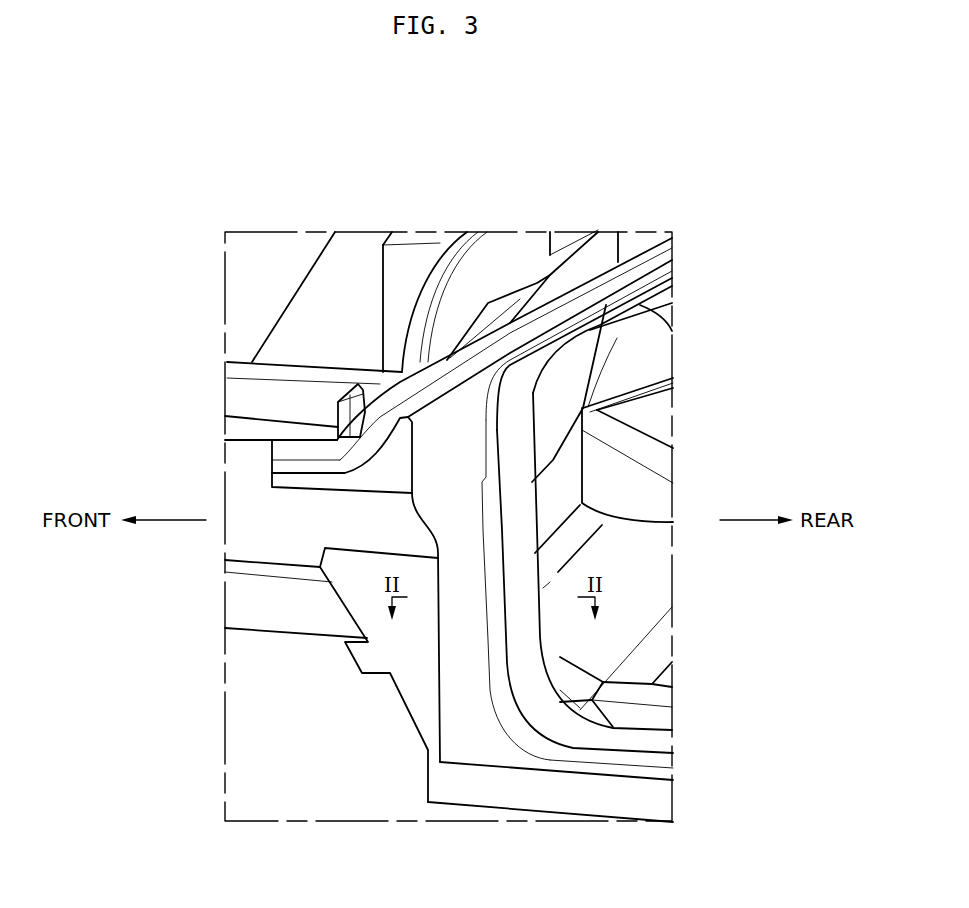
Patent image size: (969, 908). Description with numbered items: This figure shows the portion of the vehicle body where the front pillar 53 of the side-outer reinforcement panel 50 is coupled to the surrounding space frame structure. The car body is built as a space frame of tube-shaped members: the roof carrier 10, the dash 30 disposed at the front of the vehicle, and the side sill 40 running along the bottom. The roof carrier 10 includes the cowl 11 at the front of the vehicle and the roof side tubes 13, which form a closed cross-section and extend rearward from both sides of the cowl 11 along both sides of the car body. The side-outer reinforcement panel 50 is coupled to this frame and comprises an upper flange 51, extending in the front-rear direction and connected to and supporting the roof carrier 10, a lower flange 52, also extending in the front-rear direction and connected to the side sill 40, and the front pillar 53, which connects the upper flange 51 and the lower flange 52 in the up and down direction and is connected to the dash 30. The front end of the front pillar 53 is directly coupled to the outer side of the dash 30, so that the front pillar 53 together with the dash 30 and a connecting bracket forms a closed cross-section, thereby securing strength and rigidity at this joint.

The roof carrier 10 is at (426, 266).
The cowl 11 is at (508, 257).
The roof side tube 13 is at (641, 260).
The dash 30 is at (370, 608).
The side sill 40 is at (587, 797).
The side-outer reinforcement panel 50 is at (540, 783).
The upper flange 51 is at (667, 282).
The lower flange 52 is at (660, 762).
The front pillar 53 is at (462, 657).